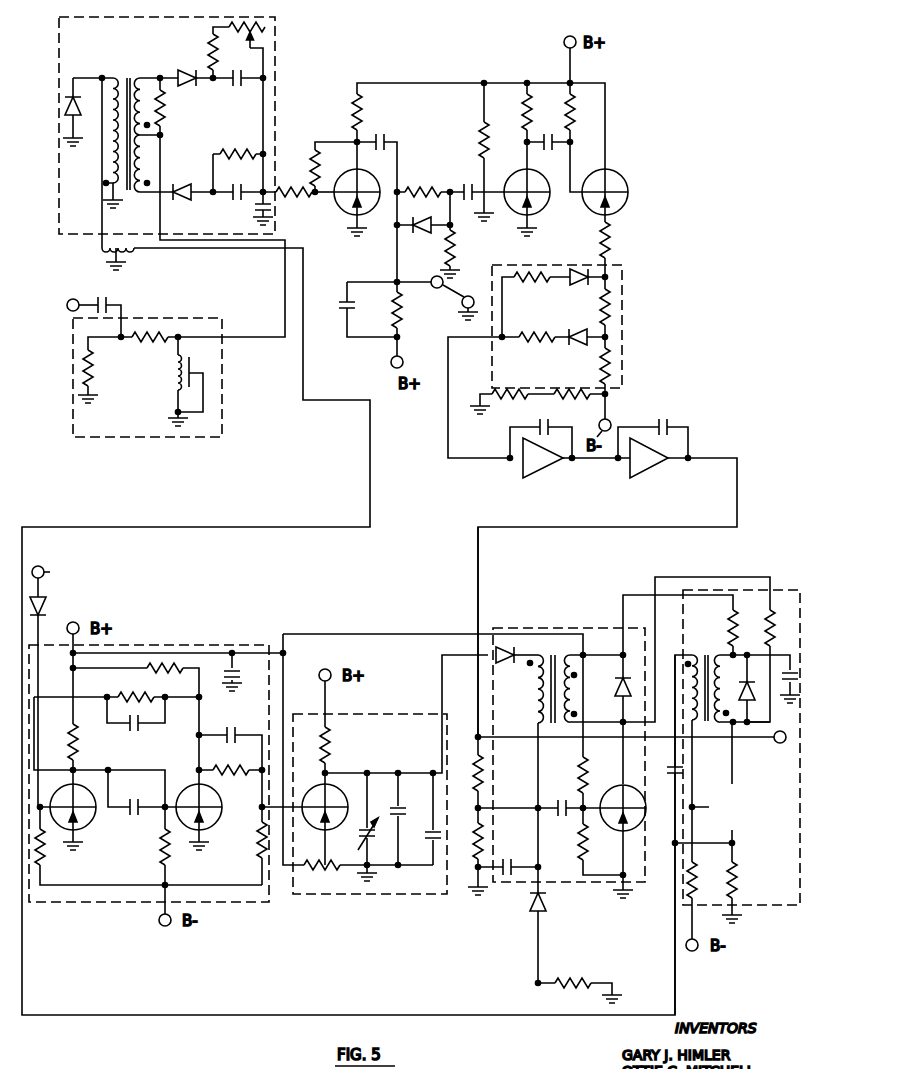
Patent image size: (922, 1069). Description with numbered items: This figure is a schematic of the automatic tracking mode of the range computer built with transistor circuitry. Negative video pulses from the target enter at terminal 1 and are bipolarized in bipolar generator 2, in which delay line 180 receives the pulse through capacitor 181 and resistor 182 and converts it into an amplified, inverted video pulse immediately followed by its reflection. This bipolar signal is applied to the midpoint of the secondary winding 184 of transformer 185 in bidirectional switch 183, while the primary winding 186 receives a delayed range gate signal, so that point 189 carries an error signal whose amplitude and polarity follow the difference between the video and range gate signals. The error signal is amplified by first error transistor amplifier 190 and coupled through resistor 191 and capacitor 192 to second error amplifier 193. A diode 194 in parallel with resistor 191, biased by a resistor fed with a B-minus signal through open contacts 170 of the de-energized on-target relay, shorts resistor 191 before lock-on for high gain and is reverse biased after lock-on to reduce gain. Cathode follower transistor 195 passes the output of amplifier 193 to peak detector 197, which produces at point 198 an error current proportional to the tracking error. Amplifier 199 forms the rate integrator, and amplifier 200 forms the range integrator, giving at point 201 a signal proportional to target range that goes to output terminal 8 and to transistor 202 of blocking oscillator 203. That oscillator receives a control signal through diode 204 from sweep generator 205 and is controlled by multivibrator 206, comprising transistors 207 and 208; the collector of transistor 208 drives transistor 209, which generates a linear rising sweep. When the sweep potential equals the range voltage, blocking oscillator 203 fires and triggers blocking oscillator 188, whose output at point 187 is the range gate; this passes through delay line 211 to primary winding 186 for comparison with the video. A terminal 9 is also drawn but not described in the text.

The terminal 1 is at (67, 300).
The bipolar generator 2 is at (188, 318).
The output terminal 8 is at (780, 749).
The terminal 9 is at (47, 573).
The open contacts 170 is at (453, 302).
The delay line 180 is at (178, 373).
The capacitor 181 is at (108, 303).
The resistor 182 is at (144, 345).
The bidirectional switch 183 is at (275, 60).
The secondary winding 184 is at (142, 168).
The transformer 185 is at (129, 77).
The primary winding 186 is at (112, 142).
The point 187 is at (675, 843).
The blocking oscillator 188 is at (740, 589).
The point 189 is at (266, 191).
The first error transistor amplifier 190 is at (363, 183).
The resistor 191 is at (417, 186).
The capacitor 192 is at (467, 185).
The second error amplifier 193 is at (533, 181).
The diode 194 is at (425, 238).
The cathode follower transistor 195 is at (618, 183).
The peak detector 197 is at (622, 309).
The point 198 is at (504, 335).
The amplifier 199 is at (553, 470).
The amplifier 200 is at (656, 470).
The point 201 is at (465, 632).
The transistor 202 is at (613, 824).
The blocking oscillator 203 is at (577, 628).
The diode 204 is at (501, 640).
The sweep generator 205 is at (372, 713).
The multivibrator 206 is at (147, 641).
The transistor 207 is at (90, 812).
The transistor 208 is at (212, 820).
The transistor 209 is at (332, 788).
The delay line 211 is at (136, 250).